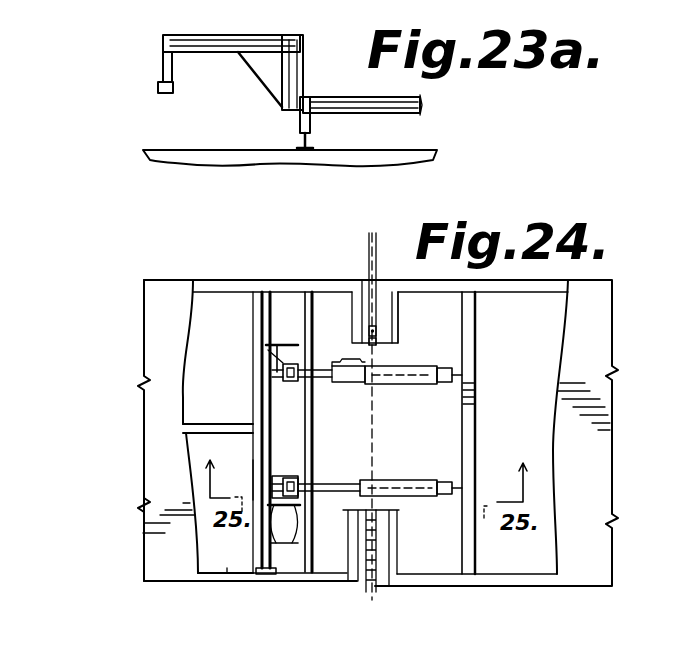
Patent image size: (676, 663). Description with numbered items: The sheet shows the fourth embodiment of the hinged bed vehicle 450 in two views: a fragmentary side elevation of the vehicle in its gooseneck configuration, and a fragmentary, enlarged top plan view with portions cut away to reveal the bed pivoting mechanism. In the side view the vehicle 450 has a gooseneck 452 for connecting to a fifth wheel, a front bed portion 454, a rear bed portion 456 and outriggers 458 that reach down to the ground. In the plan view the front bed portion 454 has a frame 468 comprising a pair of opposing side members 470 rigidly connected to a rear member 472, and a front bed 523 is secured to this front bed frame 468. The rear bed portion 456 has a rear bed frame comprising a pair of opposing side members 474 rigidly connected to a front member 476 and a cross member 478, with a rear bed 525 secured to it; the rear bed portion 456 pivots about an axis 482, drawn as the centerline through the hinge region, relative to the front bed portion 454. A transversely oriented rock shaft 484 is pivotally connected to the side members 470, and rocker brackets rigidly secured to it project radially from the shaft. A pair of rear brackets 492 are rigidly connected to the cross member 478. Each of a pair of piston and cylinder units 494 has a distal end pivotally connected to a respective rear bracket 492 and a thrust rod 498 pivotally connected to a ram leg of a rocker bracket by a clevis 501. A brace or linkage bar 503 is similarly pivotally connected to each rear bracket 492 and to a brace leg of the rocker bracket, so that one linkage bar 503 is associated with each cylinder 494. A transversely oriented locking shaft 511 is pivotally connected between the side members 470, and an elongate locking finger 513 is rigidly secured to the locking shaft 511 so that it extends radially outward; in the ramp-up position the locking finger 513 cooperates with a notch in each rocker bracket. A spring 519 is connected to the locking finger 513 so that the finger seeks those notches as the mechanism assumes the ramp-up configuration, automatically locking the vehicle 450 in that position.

In FIG. 23A, the hinged bed vehicle 450 is at (170, 109).
In FIG. 23A, the gooseneck 452 is at (238, 48).
In FIG. 23A, the side members 470 is at (333, 100).
In FIG. 24, the side members 470 is at (243, 287).
In FIG. 23A, the outriggers 458 is at (310, 122).
In FIG. 24, the frame 468 is at (215, 286).
In FIG. 24, the rear member 472 is at (356, 302).
In FIG. 24, the axis 482 is at (378, 266).
In FIG. 24, the front member 476 is at (392, 317).
In FIG. 24, the side members 474 is at (550, 296).
In FIG. 24, the rear bed portion 456 is at (612, 322).
In FIG. 24, the front bed 523 is at (152, 320).
In FIG. 24, the rear bed 525 is at (612, 424).
In FIG. 24, the front bed portion 454 is at (150, 478).
In FIG. 24, the locking finger 513 is at (288, 343).
In FIG. 24, the clevis 501 is at (281, 387).
In FIG. 24, the thrust rod 498 is at (320, 381).
In FIG. 24, the linkage bar 503 is at (363, 362).
In FIG. 24, the piston and cylinder units 494 is at (425, 385).
In FIG. 24, the rear brackets 492 is at (449, 368).
In FIG. 24, the rock shaft 484 is at (314, 436).
In FIG. 24, the cross member 478 is at (470, 446).
In FIG. 24, the spring 519 is at (302, 530).
In FIG. 24, the locking shaft 511 is at (252, 480).